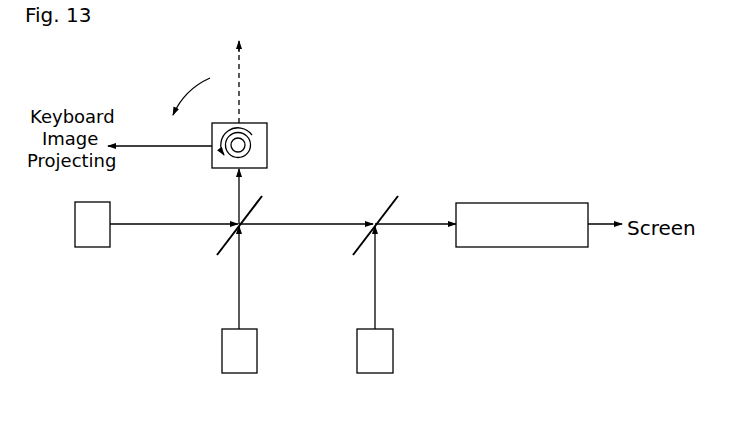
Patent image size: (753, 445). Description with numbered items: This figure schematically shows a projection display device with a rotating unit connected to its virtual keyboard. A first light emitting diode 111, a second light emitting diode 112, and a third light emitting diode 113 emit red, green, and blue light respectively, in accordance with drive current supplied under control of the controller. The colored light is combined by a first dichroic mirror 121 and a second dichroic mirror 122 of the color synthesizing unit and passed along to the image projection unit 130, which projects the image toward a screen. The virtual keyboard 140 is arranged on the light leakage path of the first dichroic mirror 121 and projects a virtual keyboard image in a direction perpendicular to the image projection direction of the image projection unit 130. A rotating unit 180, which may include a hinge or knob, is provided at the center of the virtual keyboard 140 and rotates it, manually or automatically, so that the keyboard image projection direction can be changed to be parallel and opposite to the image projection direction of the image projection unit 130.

The first light emitting diode 111 is at (93, 247).
The second light emitting diode 112 is at (240, 373).
The third light emitting diode 113 is at (376, 373).
The first dichroic mirror 121 is at (228, 242).
The second dichroic mirror 122 is at (362, 243).
The image projection unit 130 is at (563, 212).
The virtual keyboard 140 is at (263, 146).
The rotating unit 180 is at (251, 136).